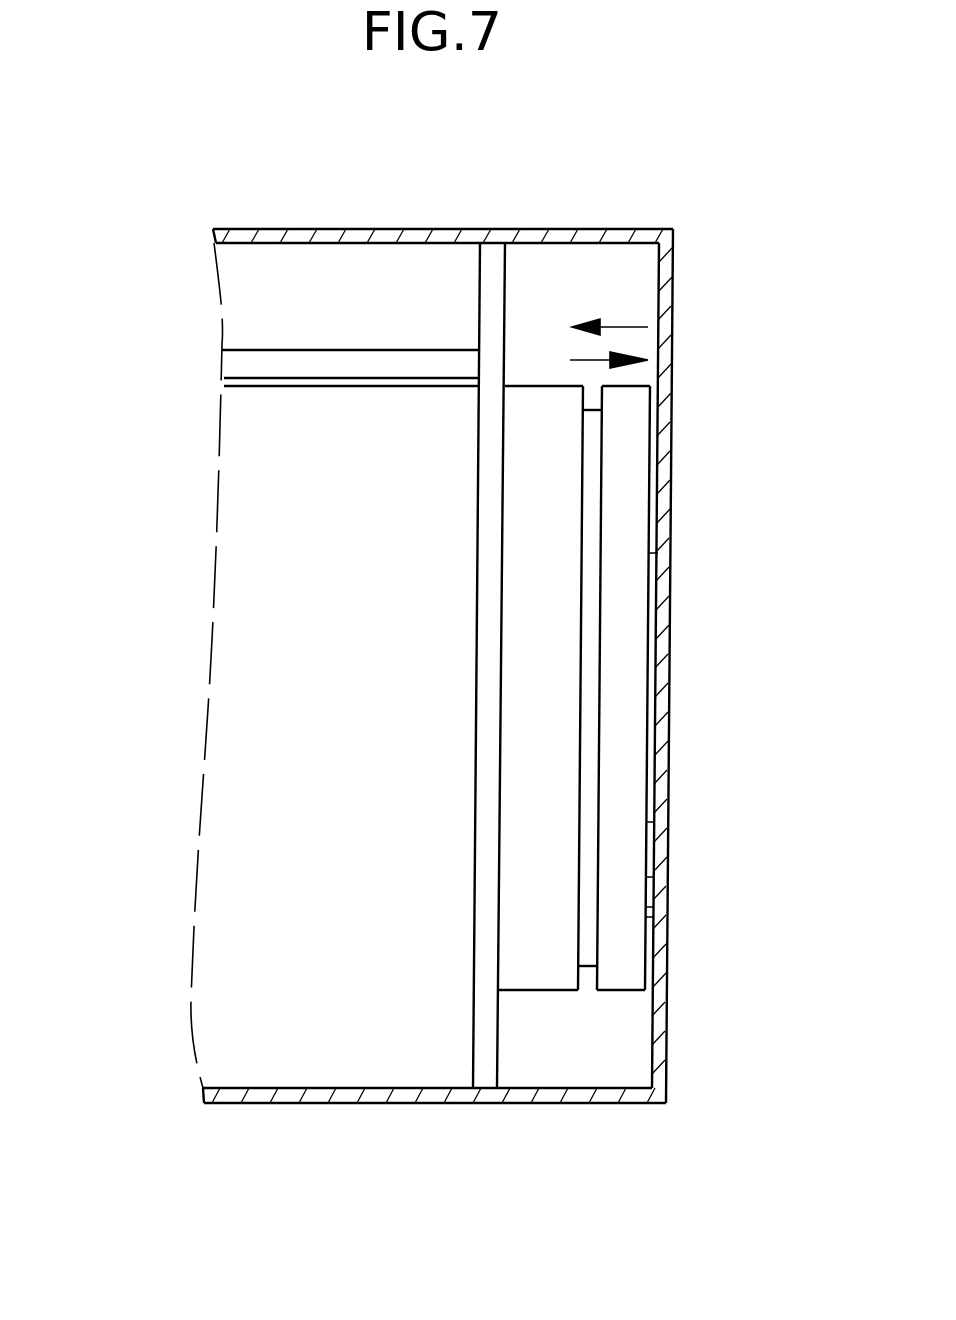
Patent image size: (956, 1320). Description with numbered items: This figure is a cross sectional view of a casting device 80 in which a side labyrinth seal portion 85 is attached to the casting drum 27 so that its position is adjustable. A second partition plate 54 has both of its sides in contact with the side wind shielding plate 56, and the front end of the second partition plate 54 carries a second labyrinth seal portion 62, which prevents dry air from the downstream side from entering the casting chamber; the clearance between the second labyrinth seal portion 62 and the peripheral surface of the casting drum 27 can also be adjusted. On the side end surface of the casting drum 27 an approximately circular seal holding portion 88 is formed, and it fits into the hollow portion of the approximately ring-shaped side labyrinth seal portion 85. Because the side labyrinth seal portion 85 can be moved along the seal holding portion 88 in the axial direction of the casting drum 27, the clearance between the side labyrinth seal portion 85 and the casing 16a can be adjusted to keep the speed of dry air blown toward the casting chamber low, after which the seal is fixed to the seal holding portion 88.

The casing 16a is at (574, 1104).
The casting drum 27 is at (240, 695).
The second partition plate 54 is at (322, 283).
The side wind shielding plate 56 is at (474, 838).
The second labyrinth seal portion 62 is at (235, 362).
The casting device 80 is at (404, 1216).
The side labyrinth seal portion 85 is at (624, 600).
The seal holding portion 88 is at (588, 970).